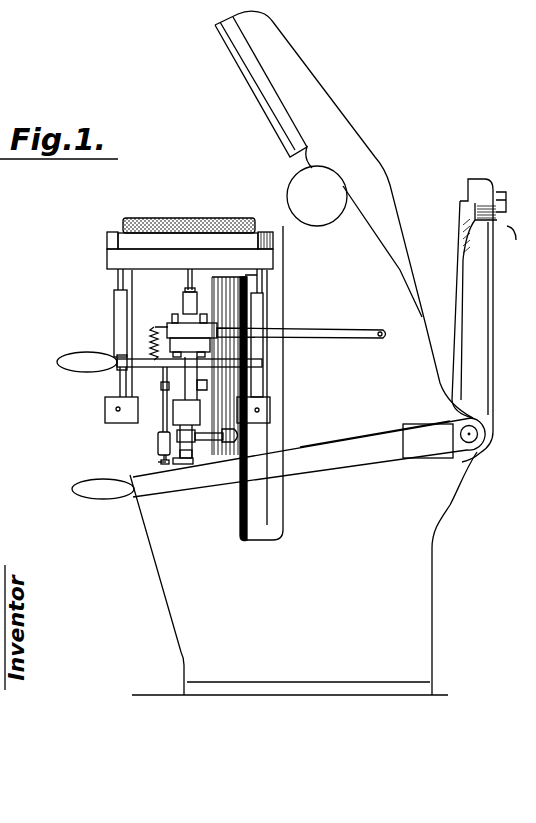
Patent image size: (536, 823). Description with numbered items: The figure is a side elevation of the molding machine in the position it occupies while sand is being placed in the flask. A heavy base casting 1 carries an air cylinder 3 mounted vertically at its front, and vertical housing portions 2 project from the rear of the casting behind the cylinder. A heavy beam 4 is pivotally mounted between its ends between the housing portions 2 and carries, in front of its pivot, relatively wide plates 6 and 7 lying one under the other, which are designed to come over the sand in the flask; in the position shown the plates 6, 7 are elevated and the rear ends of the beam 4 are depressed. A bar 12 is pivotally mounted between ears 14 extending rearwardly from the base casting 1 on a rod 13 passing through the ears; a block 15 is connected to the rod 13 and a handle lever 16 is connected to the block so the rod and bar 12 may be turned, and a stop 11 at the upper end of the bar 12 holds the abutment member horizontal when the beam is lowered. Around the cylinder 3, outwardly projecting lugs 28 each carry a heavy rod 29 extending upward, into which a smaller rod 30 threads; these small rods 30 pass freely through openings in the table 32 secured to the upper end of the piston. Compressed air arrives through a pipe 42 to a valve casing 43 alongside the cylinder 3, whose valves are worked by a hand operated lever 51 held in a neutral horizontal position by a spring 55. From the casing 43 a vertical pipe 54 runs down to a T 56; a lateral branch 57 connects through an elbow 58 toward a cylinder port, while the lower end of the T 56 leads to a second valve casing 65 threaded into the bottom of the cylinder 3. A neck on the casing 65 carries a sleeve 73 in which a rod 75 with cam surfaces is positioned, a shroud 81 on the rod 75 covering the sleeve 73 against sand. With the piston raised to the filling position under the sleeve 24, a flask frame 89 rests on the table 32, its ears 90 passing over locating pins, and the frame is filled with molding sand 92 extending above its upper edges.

The base casting 1 is at (375, 640).
The vertical housing portions 2 is at (415, 375).
The air cylinder 3 is at (278, 458).
The beam 4 is at (351, 150).
The lower plate 6 is at (254, 86).
The upper plate 7 is at (277, 104).
The stop 11 is at (462, 197).
The bar 12 is at (488, 305).
The rod 13 is at (466, 439).
The ears 14 is at (479, 453).
The block 15 is at (437, 448).
The handle lever 16 is at (348, 461).
The sleeve 24 is at (240, 318).
The lugs 28 is at (108, 415).
The rod 29 is at (117, 378).
The rod 30 is at (119, 279).
The table 32 is at (107, 264).
The pipe 42 is at (350, 327).
The valve casing 43 is at (178, 327).
The hand operated lever 51 is at (120, 357).
The vertical pipe 54 is at (207, 385).
The spring 55 is at (154, 336).
The T 56 is at (197, 456).
The lateral branch 57 is at (202, 442).
The elbow 58 is at (240, 437).
The second valve casing 65 is at (177, 465).
The sleeve 73 is at (158, 463).
The rod 75 is at (97, 452).
The shroud 81 is at (157, 445).
The flask frame 89 is at (163, 241).
The ears 90 is at (107, 238).
The molding sand 92 is at (215, 222).